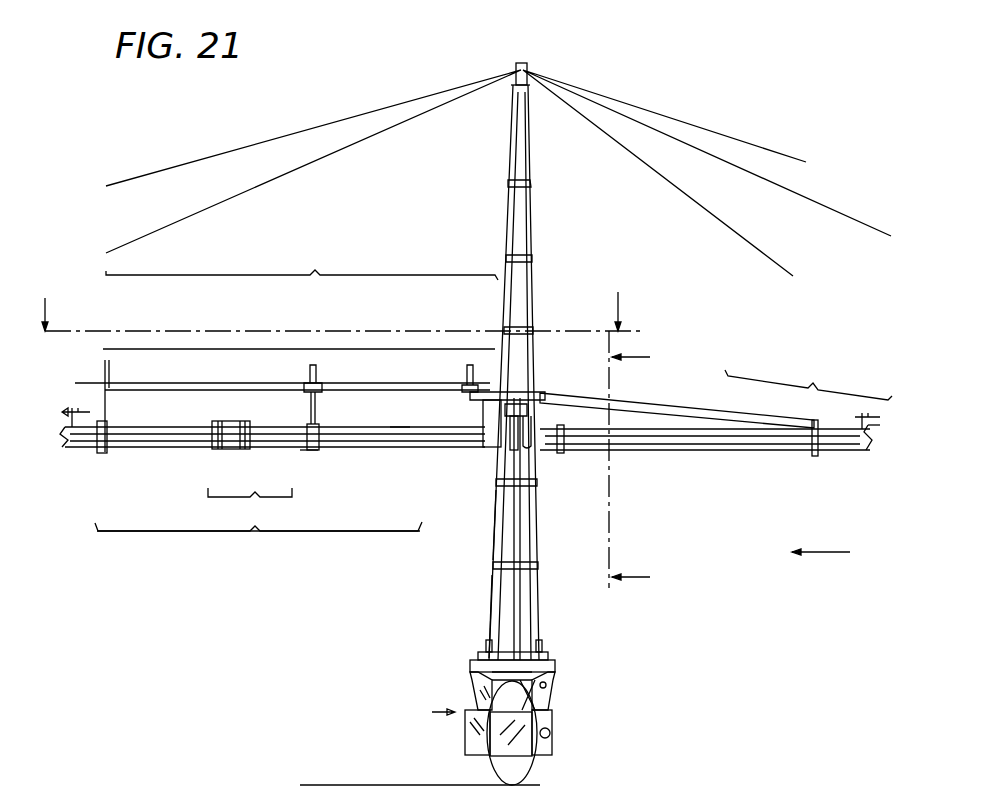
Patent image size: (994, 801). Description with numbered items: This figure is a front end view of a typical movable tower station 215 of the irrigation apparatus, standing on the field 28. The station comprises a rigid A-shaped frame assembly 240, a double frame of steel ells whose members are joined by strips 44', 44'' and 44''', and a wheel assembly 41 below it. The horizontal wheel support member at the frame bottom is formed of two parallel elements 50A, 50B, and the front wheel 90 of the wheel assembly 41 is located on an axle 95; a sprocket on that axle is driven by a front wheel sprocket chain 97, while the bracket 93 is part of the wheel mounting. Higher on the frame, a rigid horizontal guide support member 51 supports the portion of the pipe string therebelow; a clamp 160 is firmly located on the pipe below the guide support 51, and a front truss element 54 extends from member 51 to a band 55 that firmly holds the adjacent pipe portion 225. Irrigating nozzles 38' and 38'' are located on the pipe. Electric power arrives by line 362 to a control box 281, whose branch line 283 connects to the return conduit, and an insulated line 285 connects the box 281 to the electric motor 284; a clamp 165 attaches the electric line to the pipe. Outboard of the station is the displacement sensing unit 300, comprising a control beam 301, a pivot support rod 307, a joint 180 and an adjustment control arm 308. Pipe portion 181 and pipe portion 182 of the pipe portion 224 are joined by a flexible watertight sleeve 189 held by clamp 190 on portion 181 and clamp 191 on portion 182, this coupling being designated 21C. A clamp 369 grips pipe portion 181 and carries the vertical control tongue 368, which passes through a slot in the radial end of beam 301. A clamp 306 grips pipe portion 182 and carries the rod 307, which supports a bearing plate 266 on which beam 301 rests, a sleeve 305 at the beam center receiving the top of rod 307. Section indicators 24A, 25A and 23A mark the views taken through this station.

The movable tower station 215 is at (535, 232).
The strip 44''' is at (543, 219).
The strip 44'' is at (542, 494).
The strip 44' is at (539, 574).
The insulated electric line 285 is at (512, 547).
The A-shaped frame assembly 240 is at (535, 628).
The displacement sensing unit 300 is at (342, 458).
The section view indicator 24A is at (331, 302).
The section view indicator 25A is at (655, 467).
The view indicator 23A is at (825, 539).
The pipe portion 224 is at (296, 401).
The joint 180 is at (258, 518).
The control beam 301 is at (240, 386).
The control tongue 368 is at (108, 405).
The irrigating nozzle 38' is at (65, 409).
The irrigating nozzle 38'' is at (886, 442).
The pipe portion 181 is at (195, 440).
The clamp 369 is at (105, 450).
The coupling box 21C is at (238, 420).
The clamp 190 is at (220, 449).
The clamp 191 is at (246, 449).
The sleeve 189 is at (250, 485).
The sleeve 305 is at (318, 380).
The bearing plate 266 is at (310, 398).
The pivot support rod 307 is at (315, 406).
The clamp 306 is at (320, 430).
The pipe portion 182 is at (300, 452).
The adjustment control arm 308 is at (478, 386).
The control box 281 is at (483, 414).
The branch line 283 is at (528, 444).
The clamp 160 is at (520, 445).
The clamp 165 is at (564, 428).
The guide support member 51 is at (808, 381).
The front pipe support truss element 54 is at (700, 415).
The electric line 362 is at (760, 452).
The pipe portion 225 is at (848, 450).
The band 55 is at (860, 414).
The wheel support member element 50A is at (486, 645).
The wheel support member element 50B is at (545, 650).
The plate 93 is at (480, 657).
The electric motor 284 is at (556, 668).
The front wheel sprocket chain 97 is at (548, 698).
The wheel assembly 41 is at (432, 712).
The front wheel axle 95 is at (551, 733).
The front wheel 90 is at (535, 772).
The field 28 is at (368, 782).